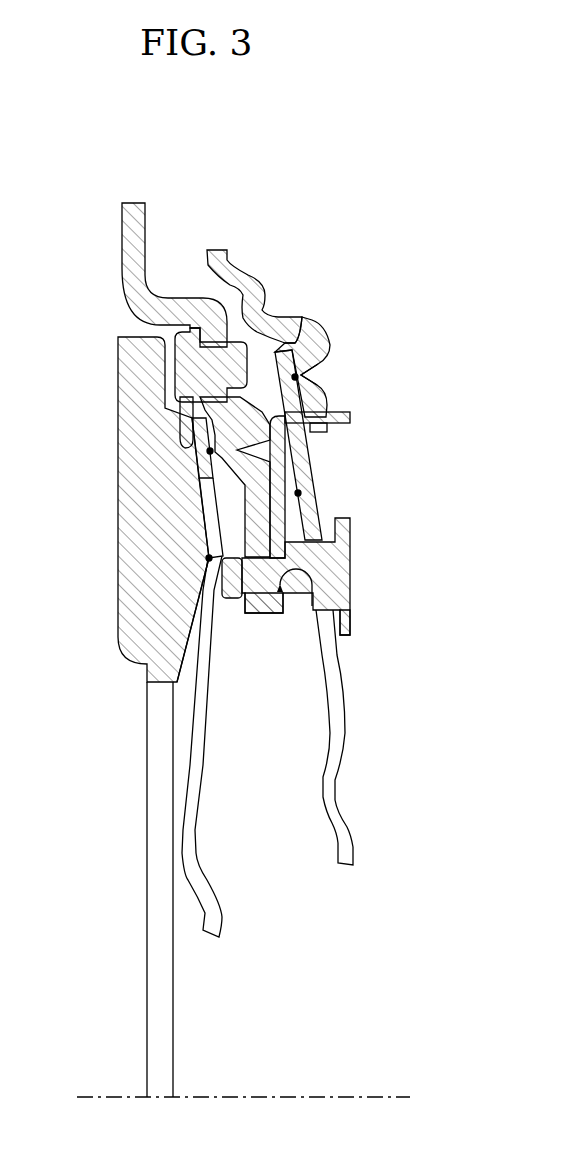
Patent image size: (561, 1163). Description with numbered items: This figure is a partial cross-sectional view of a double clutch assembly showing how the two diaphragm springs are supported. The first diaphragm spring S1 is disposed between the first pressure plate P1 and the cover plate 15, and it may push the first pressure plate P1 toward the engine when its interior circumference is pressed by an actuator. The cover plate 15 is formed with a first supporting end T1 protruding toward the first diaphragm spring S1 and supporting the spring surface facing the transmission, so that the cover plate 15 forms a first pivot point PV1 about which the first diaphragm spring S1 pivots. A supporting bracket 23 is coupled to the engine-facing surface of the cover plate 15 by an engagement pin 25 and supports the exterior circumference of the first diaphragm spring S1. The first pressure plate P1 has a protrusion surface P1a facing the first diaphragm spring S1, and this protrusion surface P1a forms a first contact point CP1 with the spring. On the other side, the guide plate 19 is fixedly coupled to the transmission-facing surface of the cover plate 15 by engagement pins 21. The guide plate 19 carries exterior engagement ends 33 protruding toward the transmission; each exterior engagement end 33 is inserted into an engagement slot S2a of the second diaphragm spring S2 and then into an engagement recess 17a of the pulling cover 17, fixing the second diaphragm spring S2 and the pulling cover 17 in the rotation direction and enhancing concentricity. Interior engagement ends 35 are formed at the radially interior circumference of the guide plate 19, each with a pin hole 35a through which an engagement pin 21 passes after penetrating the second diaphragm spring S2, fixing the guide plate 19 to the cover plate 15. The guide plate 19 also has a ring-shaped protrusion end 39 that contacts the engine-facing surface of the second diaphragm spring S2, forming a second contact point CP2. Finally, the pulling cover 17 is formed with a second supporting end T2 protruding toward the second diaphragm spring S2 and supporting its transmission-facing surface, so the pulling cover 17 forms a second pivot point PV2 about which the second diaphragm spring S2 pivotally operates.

The cover plate 15 is at (125, 227).
The engagement pin 25 is at (178, 362).
The supporting bracket 23 is at (190, 408).
The first pivot point PV1 is at (195, 459).
The first supporting end T1 is at (212, 452).
The first pressure plate P1 is at (130, 534).
The first contact point CP1 is at (209, 558).
The protrusion surface P1a is at (225, 607).
The first diaphragm spring S1 is at (203, 762).
The interior engagement end 35 is at (270, 614).
The pin hole 35a is at (310, 614).
The second diaphragm spring S2 is at (339, 722).
The engagement slot S2a is at (268, 350).
The pulling cover 17 is at (312, 330).
The second pivot point PV2 is at (303, 367).
The second supporting end T2 is at (305, 378).
The exterior engagement end 33 is at (322, 419).
The engagement recess 17a is at (290, 424).
The protrusion end 39 is at (320, 472).
The second contact point CP2 is at (310, 498).
The guide plate 19 is at (286, 530).
The engagement pin 21 is at (337, 590).